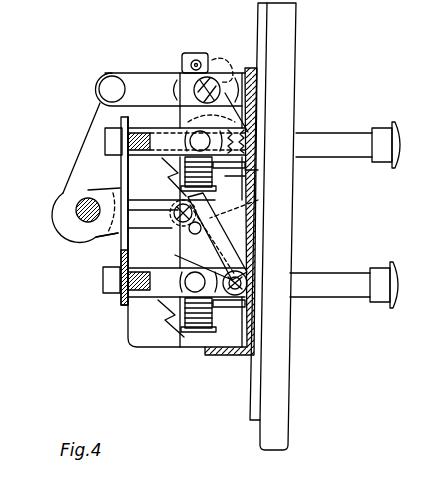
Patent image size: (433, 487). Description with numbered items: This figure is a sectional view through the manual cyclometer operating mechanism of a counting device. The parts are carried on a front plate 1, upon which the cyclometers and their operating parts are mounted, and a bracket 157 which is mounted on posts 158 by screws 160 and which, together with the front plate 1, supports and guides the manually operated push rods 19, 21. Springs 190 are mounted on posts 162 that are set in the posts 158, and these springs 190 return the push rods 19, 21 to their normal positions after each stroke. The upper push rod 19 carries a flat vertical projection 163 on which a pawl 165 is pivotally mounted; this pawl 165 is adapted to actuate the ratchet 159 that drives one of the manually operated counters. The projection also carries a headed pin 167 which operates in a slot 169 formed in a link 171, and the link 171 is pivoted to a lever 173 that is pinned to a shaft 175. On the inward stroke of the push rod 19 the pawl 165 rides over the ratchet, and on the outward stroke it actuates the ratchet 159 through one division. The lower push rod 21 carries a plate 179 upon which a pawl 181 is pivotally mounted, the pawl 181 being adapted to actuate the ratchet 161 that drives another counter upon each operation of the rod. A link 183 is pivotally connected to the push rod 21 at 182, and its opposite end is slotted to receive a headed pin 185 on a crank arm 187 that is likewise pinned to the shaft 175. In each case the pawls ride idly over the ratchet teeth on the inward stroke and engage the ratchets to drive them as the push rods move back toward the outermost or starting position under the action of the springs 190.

The front plate 1 is at (263, 50).
The push rod 19 is at (105, 142).
The push rod 21 is at (103, 277).
The bracket 157 is at (129, 186).
The post 158 is at (181, 131).
The ratchet 159 is at (222, 176).
The screw 160 is at (120, 147).
The ratchet 161 is at (160, 310).
The post 162 is at (180, 188).
The flat vertical projection 163 is at (250, 110).
The pawl 165 is at (216, 60).
The headed pin 167 is at (216, 73).
The slot 169 is at (185, 75).
The link 171 is at (178, 84).
The lever 173 is at (94, 120).
The shaft 175 is at (85, 213).
The plate 179 is at (225, 232).
The pawl 181 is at (258, 200).
The pivot connection 182 is at (256, 297).
The link 183 is at (175, 255).
The headed pin 185 is at (172, 216).
The crank arm 187 is at (113, 234).
The spring 190 is at (258, 170).